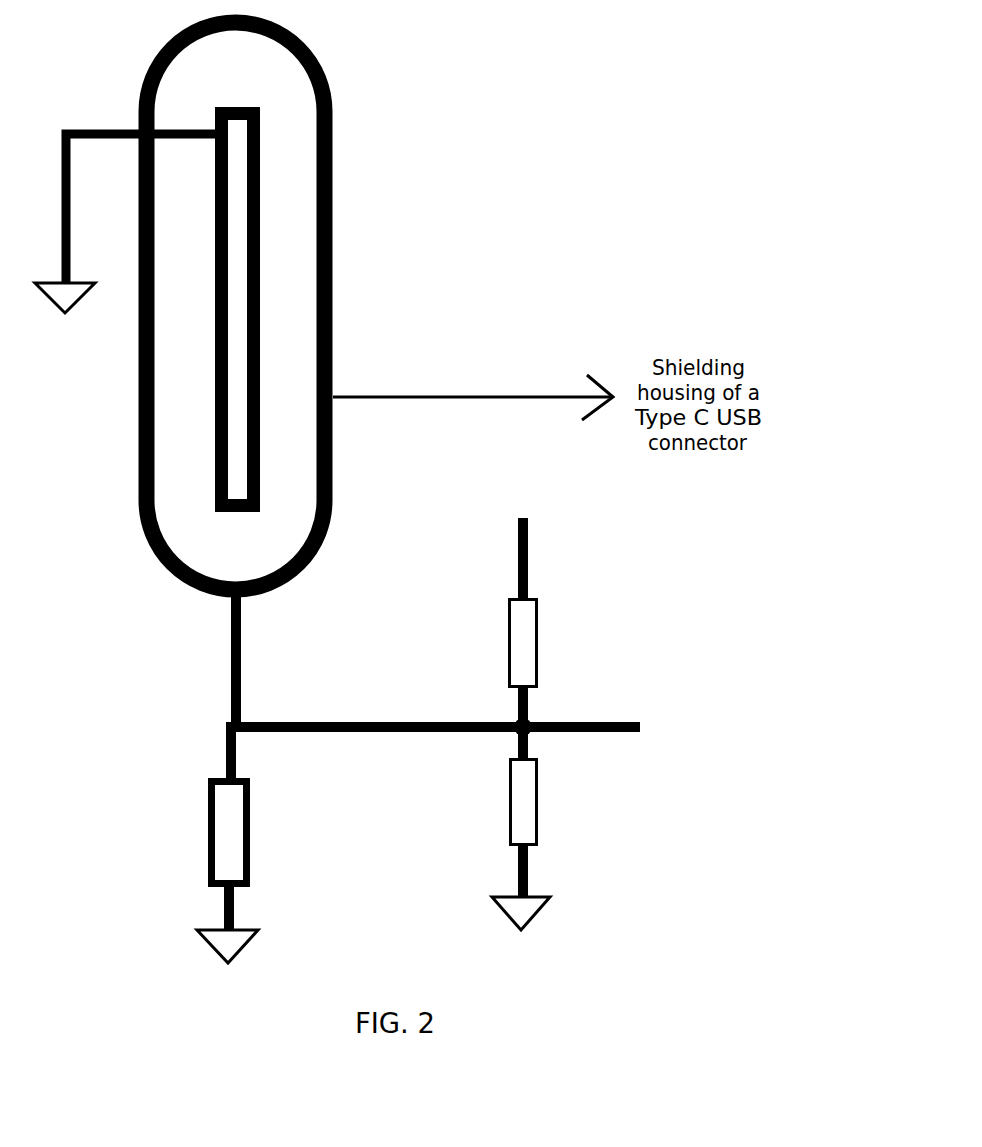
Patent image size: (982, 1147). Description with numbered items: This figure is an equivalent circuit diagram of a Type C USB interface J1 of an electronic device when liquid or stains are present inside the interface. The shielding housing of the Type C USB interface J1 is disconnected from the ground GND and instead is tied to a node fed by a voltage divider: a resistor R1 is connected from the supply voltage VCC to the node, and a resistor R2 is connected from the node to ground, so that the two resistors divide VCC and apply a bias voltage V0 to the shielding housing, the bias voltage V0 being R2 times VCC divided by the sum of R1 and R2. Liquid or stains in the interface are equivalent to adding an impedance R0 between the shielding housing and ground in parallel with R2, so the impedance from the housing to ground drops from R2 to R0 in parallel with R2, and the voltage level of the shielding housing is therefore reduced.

The Type C USB interface J1 is at (226, 304).
The ground GND is at (125, 243).
The voltage Vcc VCC is at (516, 540).
The bias voltage V0 is at (577, 712).
The impedance R0 is at (246, 842).
The resistor R1 is at (502, 664).
The resistor R2 is at (508, 828).